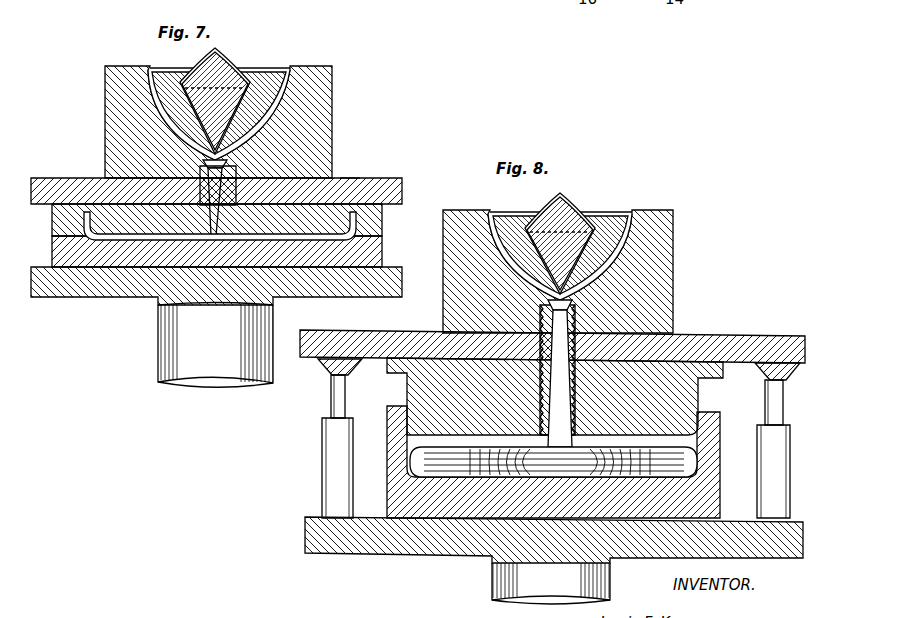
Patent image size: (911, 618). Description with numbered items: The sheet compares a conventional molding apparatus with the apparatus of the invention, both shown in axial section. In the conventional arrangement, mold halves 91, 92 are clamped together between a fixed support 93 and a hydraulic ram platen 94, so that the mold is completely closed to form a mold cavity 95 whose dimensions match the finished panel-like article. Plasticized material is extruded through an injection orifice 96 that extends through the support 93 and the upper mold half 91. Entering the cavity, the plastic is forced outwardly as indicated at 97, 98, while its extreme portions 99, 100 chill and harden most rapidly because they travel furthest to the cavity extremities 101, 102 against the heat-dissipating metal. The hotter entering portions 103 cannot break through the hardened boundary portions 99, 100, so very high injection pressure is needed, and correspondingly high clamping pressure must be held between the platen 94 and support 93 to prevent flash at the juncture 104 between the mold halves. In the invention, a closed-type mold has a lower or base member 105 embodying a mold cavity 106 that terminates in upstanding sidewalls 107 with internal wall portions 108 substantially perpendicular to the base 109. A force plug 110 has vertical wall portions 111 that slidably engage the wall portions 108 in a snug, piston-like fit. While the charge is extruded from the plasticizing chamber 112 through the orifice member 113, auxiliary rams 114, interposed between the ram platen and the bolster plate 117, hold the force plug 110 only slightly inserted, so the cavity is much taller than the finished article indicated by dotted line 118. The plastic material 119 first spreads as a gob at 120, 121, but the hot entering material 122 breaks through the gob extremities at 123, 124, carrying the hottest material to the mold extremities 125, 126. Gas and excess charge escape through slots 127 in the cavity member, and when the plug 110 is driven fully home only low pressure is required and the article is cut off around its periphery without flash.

In FIG. 7, the upper mold half 91 is at (382, 213).
In FIG. 7, the lower mold half 92 is at (382, 241).
In FIG. 7, the fixed support 93 is at (60, 178).
In FIG. 7, the hydraulic ram platen 94 is at (62, 297).
In FIG. 7, the mold cavity 95 is at (332, 111).
In FIG. 7, the injection orifice 96 is at (240, 168).
In FIG. 7, the outwardly forced plastic material 97 is at (150, 240).
In FIG. 7, the outwardly forced plastic material 98 is at (290, 240).
In FIG. 7, the extreme boundary portion of plastic charge 99 is at (122, 240).
In FIG. 7, the extreme boundary portion of plastic charge 100 is at (318, 240).
In FIG. 7, the mold cavity extremity 101 is at (100, 178).
In FIG. 7, the mold cavity extremity 102 is at (348, 178).
In FIG. 7, the entering portion of plastic charge 103 is at (208, 302).
In FIG. 7, the juncture between mold halves 104 is at (86, 222).
In FIG. 8, the lower or base member 105 is at (405, 498).
In FIG. 8, the mold cavity 106 is at (620, 530).
In FIG. 8, the upstanding sidewall 107 is at (398, 418).
In FIG. 8, the internal wall portion 108 is at (410, 441).
In FIG. 8, the base of cavity member 109 is at (706, 535).
In FIG. 8, the force plug 110 is at (396, 366).
In FIG. 8, the vertical wall portion of force plug 111 is at (405, 393).
In FIG. 8, the plasticizing chamber 112 is at (673, 270).
In FIG. 8, the orifice member 113 is at (578, 346).
In FIG. 8, the auxiliary ram 114 is at (330, 468).
In FIG. 8, the bolster plate 117 is at (760, 337).
In FIG. 8, the finished article outline 118 is at (480, 505).
In FIG. 8, the plastic material 119 is at (545, 380).
In FIG. 8, the gob-like portion of plastic charge 120 is at (620, 446).
In FIG. 8, the gob-like portion of plastic charge 121 is at (478, 446).
In FIG. 8, the hot entering material 122 is at (550, 520).
In FIG. 8, the breakthrough of hot material 123 is at (692, 460).
In FIG. 8, the breakthrough of hot material 124 is at (415, 458).
In FIG. 8, the mold extremity 125 is at (692, 472).
In FIG. 8, the mold extremity 126 is at (420, 473).
In FIG. 8, the slot 127 is at (712, 432).